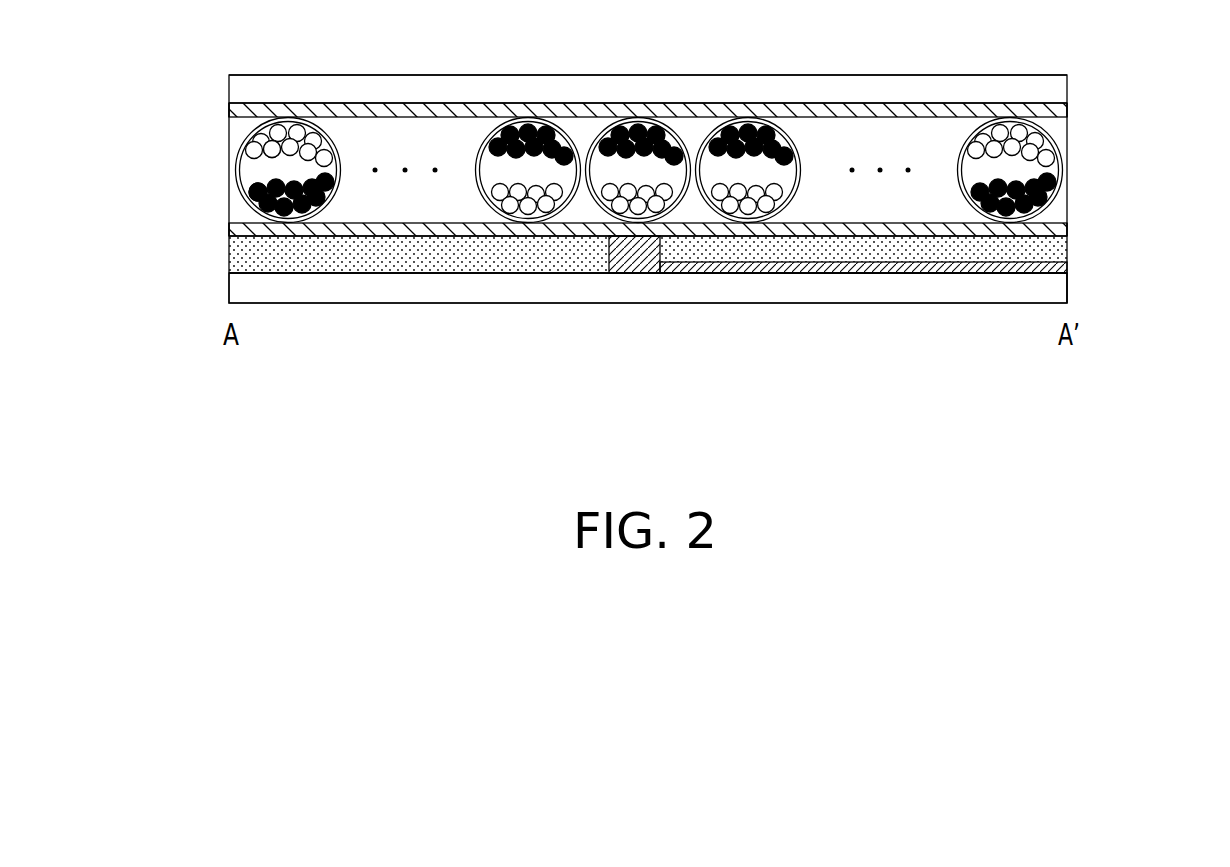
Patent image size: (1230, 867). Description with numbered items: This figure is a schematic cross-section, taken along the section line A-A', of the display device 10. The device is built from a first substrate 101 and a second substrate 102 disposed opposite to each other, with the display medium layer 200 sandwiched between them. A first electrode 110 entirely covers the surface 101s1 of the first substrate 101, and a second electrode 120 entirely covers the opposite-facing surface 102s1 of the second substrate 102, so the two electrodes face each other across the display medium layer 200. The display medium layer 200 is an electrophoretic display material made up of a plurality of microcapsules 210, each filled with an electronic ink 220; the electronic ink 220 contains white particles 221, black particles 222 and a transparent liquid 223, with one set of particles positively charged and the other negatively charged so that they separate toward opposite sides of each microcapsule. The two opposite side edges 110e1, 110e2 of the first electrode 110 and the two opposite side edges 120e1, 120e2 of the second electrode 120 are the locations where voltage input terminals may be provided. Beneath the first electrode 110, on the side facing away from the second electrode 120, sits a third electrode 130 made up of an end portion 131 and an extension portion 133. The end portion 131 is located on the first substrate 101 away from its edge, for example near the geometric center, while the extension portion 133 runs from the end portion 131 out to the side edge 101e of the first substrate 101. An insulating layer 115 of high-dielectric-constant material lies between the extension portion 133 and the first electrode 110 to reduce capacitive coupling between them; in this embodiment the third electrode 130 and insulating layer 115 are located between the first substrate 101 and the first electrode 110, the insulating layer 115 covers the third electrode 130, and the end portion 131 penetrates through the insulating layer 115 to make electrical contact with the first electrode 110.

The display device 10 is at (653, 236).
The first substrate 101 is at (975, 295).
The surface of first substrate 101s1 is at (441, 264).
The side edge of first substrate 101e is at (1067, 290).
The second substrate 102 is at (648, 71).
The surface of second substrate 102s1 is at (440, 116).
The first electrode 110 is at (1057, 236).
The side edge of first electrode 110e1 is at (1067, 230).
The side edge of first electrode 110e2 is at (229, 229).
The insulating layer 115 is at (1053, 252).
The second electrode 120 is at (957, 110).
The side edge of second electrode 120e1 is at (1067, 110).
The side edge of second electrode 120e2 is at (229, 110).
The third electrode 130 is at (838, 332).
The end portion 131 is at (633, 258).
The extension portion 133 is at (793, 273).
The display medium layer 200 is at (611, 166).
The microcapsule 210 is at (217, 166).
The electronic ink 220 is at (217, 170).
The white particles 221 is at (250, 148).
The black particles 222 is at (250, 193).
The transparent liquid 223 is at (253, 170).